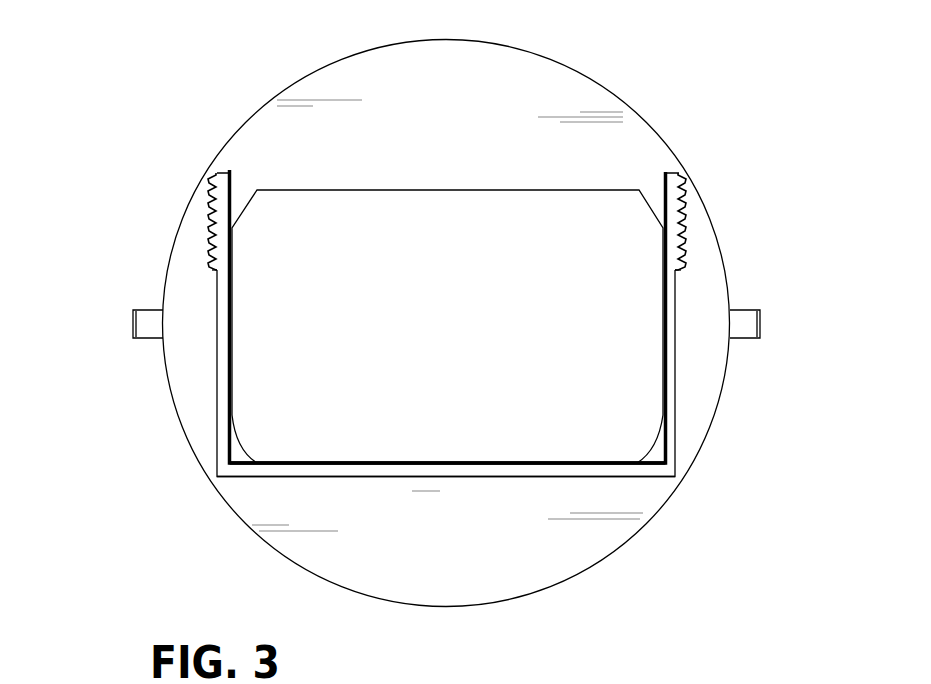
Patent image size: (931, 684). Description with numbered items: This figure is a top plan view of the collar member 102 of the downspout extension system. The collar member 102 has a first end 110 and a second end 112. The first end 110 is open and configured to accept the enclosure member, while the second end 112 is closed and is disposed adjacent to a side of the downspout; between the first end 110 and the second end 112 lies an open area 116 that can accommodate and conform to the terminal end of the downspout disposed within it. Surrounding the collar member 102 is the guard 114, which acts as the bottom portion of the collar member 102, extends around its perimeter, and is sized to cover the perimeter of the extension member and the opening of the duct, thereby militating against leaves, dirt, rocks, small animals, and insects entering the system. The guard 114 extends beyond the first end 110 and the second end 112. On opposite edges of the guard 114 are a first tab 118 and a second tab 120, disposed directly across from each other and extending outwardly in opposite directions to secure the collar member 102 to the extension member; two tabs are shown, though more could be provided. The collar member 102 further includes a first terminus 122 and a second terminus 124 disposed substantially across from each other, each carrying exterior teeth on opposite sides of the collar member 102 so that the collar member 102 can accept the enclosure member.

The collar member 102 is at (570, 88).
The first end 110 is at (663, 165).
The second end 112 is at (499, 463).
The guard 114 is at (342, 78).
The insert body 116 is at (387, 207).
The first tab 118 is at (760, 322).
The second tab 120 is at (133, 322).
The first terminus 122 is at (686, 223).
The second terminus 124 is at (212, 223).